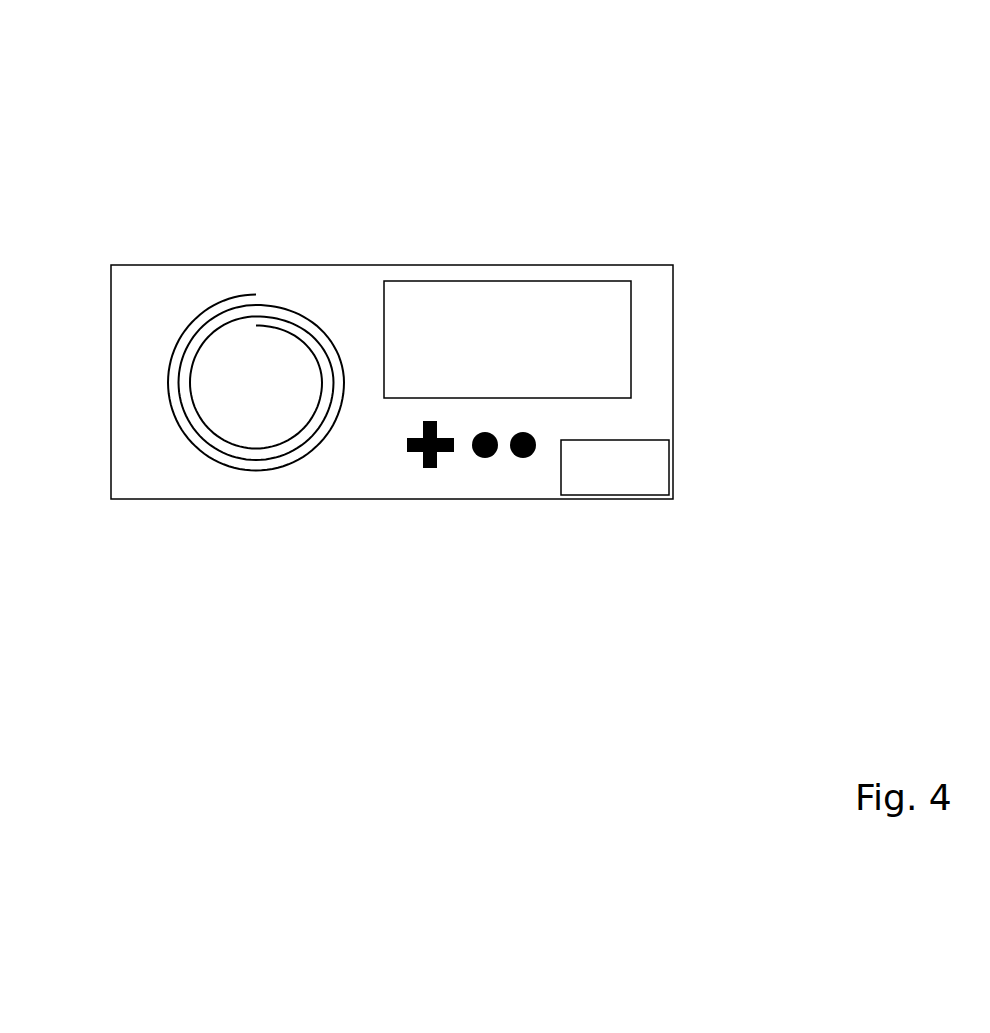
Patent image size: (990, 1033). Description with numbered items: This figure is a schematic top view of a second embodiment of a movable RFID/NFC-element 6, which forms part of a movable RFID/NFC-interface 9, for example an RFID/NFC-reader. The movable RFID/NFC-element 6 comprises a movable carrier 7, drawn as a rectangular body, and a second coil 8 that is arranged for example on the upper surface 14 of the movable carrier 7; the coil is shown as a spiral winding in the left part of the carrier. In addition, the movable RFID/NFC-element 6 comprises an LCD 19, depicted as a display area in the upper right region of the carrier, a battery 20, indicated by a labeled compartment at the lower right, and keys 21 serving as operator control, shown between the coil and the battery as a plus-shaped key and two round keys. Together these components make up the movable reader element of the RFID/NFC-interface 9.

The movable RFID/NFC-element 6 is at (389, 303).
The movable RFID/NFC-interface 9 is at (556, 96).
The movable carrier 7 is at (152, 283).
The upper surface 14 is at (182, 478).
The second coil 8 is at (254, 294).
The LCD 19 is at (597, 295).
The keys 21 is at (430, 468).
The battery 20 is at (653, 480).